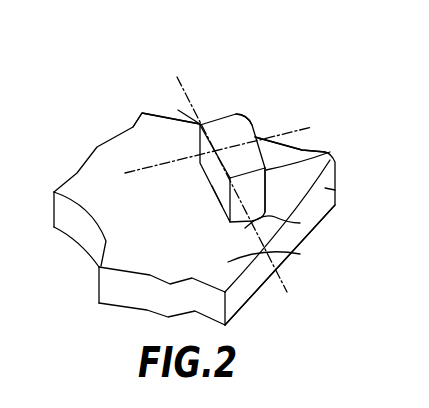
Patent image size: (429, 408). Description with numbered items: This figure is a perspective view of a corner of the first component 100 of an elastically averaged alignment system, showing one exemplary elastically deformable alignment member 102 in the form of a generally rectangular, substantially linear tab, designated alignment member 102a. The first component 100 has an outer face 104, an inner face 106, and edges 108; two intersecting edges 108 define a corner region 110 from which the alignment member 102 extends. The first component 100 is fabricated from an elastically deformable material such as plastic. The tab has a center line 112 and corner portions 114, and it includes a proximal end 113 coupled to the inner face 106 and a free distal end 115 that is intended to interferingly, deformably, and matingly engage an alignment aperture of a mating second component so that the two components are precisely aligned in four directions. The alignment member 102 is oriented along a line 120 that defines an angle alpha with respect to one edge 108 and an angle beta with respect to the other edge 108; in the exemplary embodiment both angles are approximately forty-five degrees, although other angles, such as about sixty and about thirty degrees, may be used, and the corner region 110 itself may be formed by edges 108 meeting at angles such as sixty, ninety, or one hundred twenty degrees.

The first component 100 is at (232, 297).
The elastically deformable alignment member 102 is at (266, 113).
The alignment member (rectangular linear tab) 102a is at (217, 189).
The outer face 104 is at (238, 302).
The inner face 106 is at (300, 254).
The edge 108 is at (300, 223).
The corner region 110 is at (308, 148).
The center line 112 is at (297, 127).
The proximal end 113 is at (193, 146).
The corner portion 114 is at (238, 112).
The distal end 115 is at (282, 178).
The line 120 is at (183, 89).